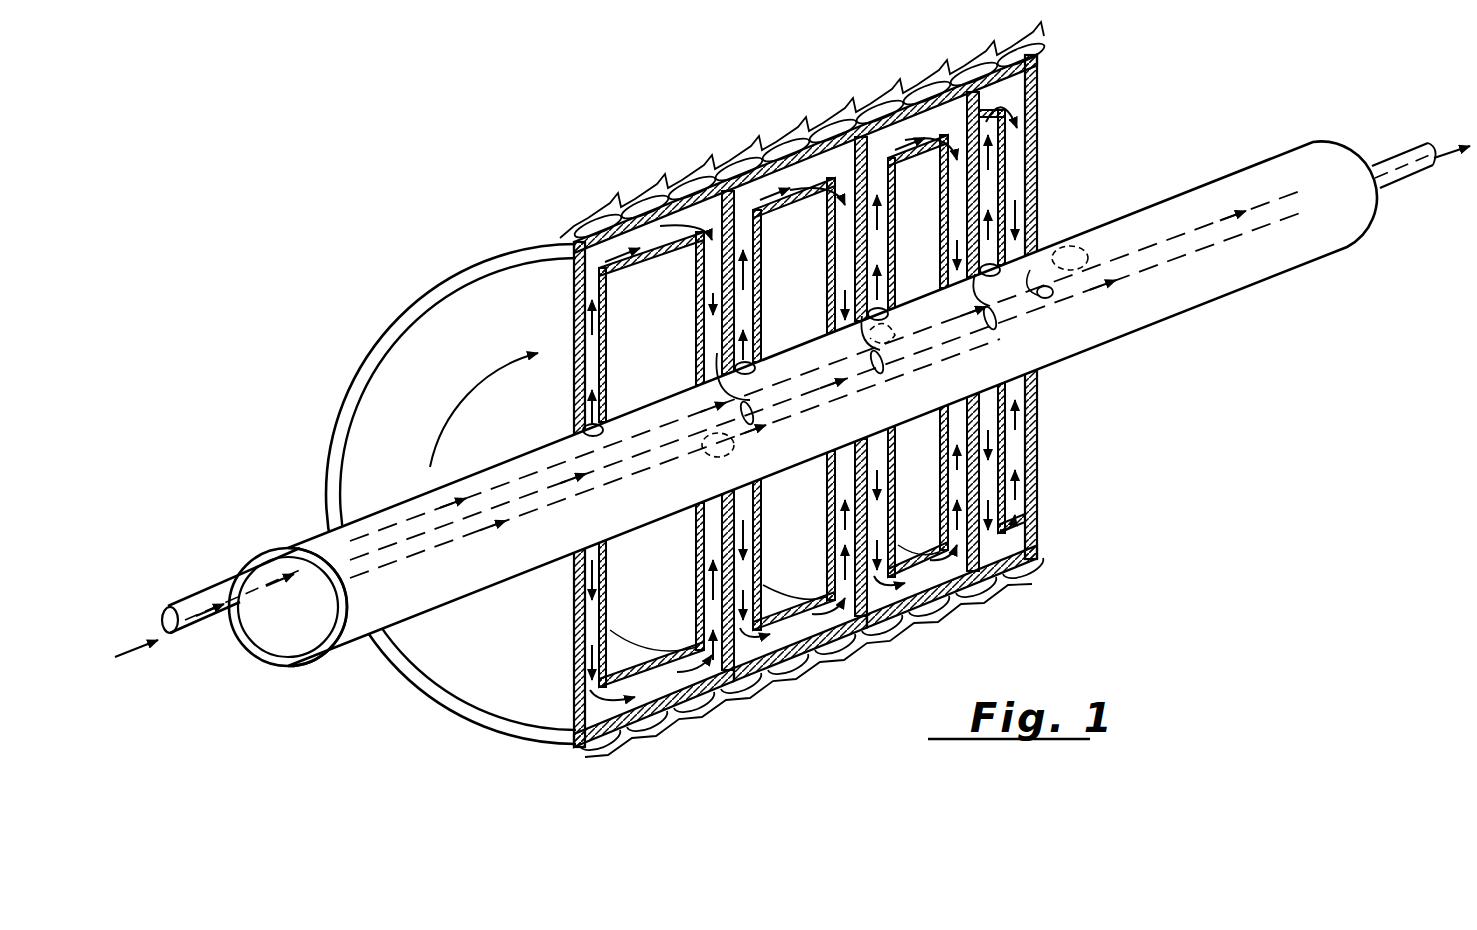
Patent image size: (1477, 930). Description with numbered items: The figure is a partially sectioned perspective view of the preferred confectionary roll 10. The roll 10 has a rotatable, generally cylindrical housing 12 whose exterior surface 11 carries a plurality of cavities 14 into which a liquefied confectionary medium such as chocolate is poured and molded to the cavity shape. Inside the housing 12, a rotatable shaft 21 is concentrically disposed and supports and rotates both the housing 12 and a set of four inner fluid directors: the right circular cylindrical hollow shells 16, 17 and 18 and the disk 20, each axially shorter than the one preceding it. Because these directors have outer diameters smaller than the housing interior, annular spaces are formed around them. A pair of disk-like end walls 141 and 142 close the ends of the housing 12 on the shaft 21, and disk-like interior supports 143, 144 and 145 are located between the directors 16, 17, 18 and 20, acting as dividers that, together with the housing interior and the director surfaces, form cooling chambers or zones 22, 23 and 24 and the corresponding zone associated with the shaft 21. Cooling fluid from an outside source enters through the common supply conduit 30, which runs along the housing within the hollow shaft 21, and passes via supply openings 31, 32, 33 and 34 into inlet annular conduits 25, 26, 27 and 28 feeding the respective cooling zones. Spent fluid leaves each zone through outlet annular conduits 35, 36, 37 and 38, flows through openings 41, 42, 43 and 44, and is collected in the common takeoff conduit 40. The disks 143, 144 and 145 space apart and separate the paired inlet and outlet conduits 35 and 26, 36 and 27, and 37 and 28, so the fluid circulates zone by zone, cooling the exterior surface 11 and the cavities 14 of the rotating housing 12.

The confectionary roll 10 is at (468, 250).
The exterior surface 11 is at (858, 112).
The housing 12 is at (410, 328).
The cavities 14 is at (618, 228).
The inner fluid director 16 is at (663, 673).
The inner fluid director 17 is at (813, 620).
The inner fluid director 18 is at (927, 577).
The disk 20 is at (1010, 490).
The rotatable shaft 21 is at (347, 640).
The cooling zone 22 is at (780, 178).
The cooling zone 23 is at (923, 125).
The cooling zone 24 is at (1012, 90).
The inlet annular conduit 25 is at (618, 320).
The inlet annular conduit 26 is at (748, 277).
The inlet annular conduit 27 is at (873, 243).
The inlet annular conduit 28 is at (990, 198).
The common supply conduit 30 is at (232, 596).
The supply opening 31 is at (577, 427).
The supply opening 32 is at (787, 353).
The supply opening 33 is at (912, 300).
The supply opening 34 is at (1010, 245).
The outlet annular conduit 35 is at (710, 333).
The outlet annular conduit 36 is at (843, 232).
The outlet annular conduit 37 is at (960, 178).
The outlet annular conduit 38 is at (1022, 150).
The common takeoff conduit 40 is at (1412, 182).
The outlet opening 41 is at (703, 440).
The outlet opening 42 is at (893, 335).
The outlet opening 43 is at (1036, 297).
The outlet opening 44 is at (1083, 287).
The end wall 141 is at (568, 707).
The end wall 142 is at (1040, 492).
The interior support 143 is at (742, 652).
The interior support 144 is at (880, 605).
The interior support 145 is at (993, 563).